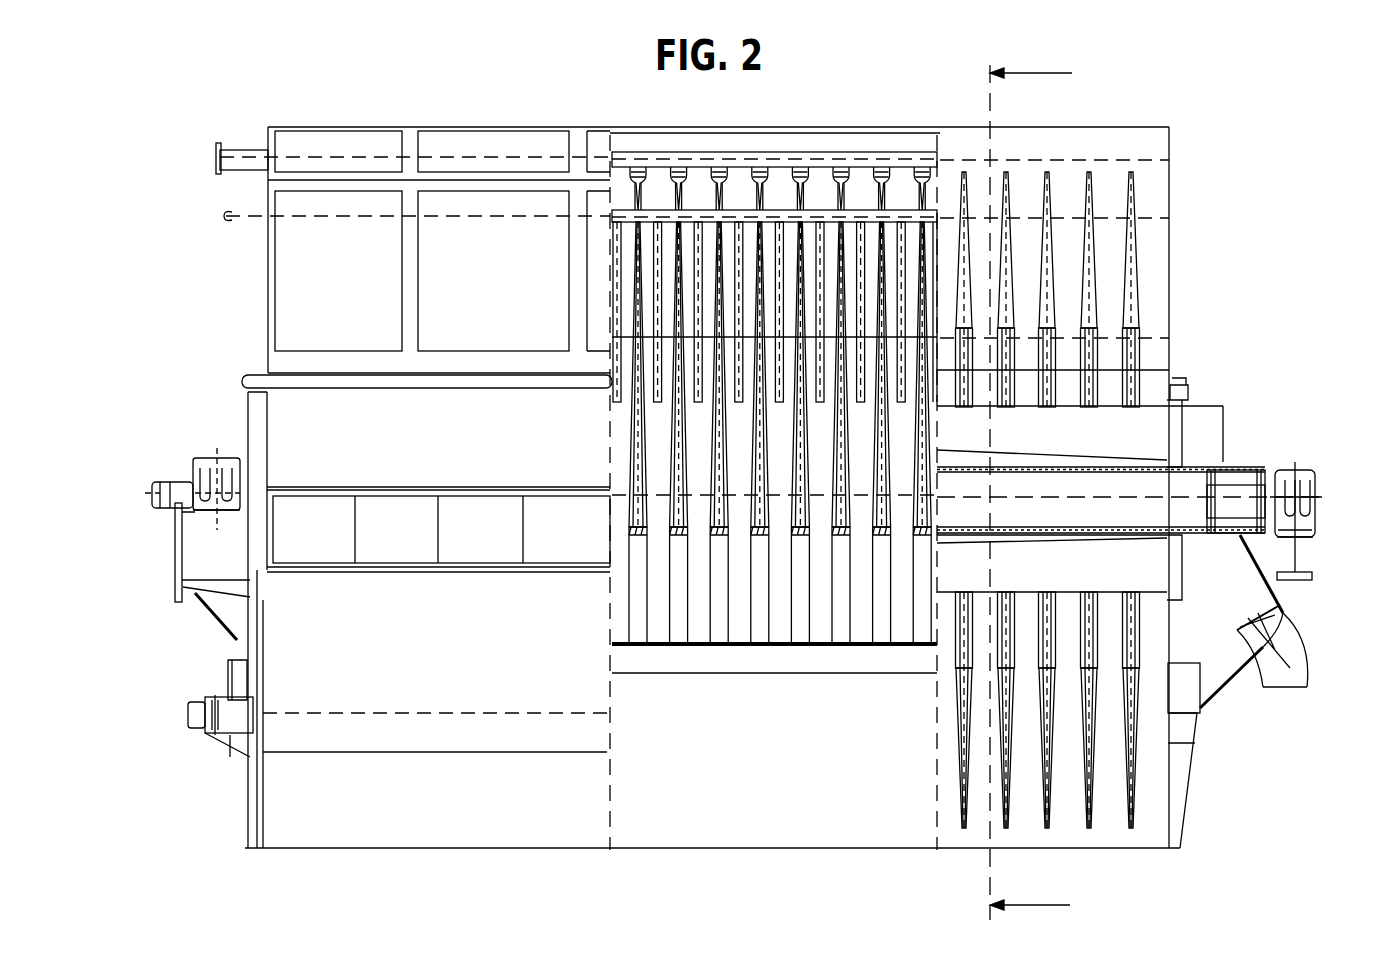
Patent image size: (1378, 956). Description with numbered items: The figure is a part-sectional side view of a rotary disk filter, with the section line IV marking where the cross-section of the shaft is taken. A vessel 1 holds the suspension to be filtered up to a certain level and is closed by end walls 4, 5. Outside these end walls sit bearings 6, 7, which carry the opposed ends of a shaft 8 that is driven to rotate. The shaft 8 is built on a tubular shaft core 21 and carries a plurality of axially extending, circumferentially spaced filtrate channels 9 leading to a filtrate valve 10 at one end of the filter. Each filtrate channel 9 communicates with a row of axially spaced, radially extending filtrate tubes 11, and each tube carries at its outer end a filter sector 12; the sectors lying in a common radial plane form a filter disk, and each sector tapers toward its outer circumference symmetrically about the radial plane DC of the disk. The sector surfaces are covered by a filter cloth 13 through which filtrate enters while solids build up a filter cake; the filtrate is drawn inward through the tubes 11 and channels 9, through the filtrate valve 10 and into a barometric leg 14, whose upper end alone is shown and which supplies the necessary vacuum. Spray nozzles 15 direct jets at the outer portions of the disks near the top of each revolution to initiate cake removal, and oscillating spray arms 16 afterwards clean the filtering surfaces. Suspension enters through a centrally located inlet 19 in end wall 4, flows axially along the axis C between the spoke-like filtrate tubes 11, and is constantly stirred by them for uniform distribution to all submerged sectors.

The vessel 1 is at (237, 636).
The end wall 4 is at (243, 418).
The end wall 5 is at (1175, 742).
The bearing 6 is at (210, 455).
The bearing 7 is at (1296, 469).
The shaft 8 is at (1105, 403).
The filtrate channel 9 is at (1145, 432).
The filtrate valve 10 is at (1195, 562).
The filtrate tube 11 is at (1068, 590).
The filter sector 12 is at (1131, 172).
The filter cloth 13 is at (1130, 828).
The barometric leg 14 is at (1305, 675).
The spray nozzle 15 is at (800, 183).
The oscillating spray arm 16 is at (614, 262).
The inlet 19 is at (166, 585).
The tubular shaft core 21 is at (1218, 480).
The axis C is at (1040, 497).
The radial plane of disk DC is at (1141, 280).
The section line IV is at (1047, 490).